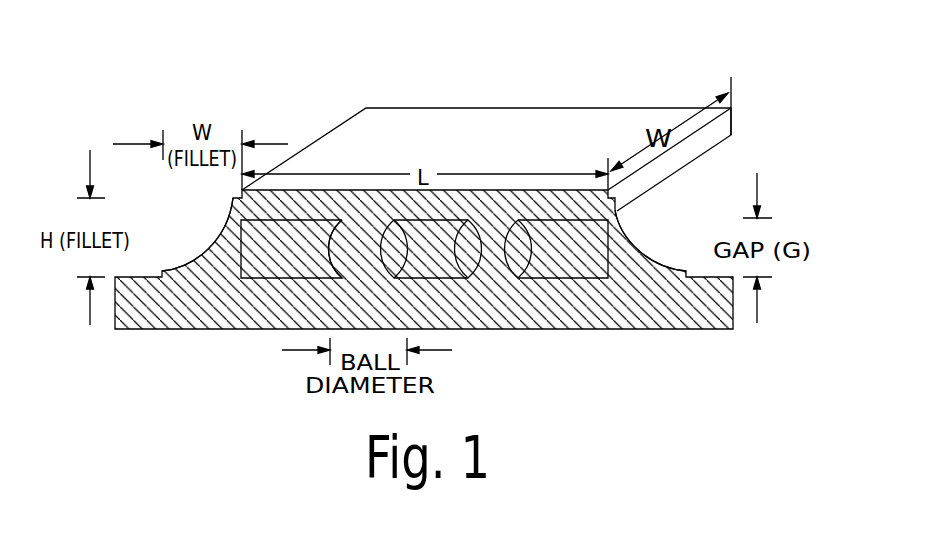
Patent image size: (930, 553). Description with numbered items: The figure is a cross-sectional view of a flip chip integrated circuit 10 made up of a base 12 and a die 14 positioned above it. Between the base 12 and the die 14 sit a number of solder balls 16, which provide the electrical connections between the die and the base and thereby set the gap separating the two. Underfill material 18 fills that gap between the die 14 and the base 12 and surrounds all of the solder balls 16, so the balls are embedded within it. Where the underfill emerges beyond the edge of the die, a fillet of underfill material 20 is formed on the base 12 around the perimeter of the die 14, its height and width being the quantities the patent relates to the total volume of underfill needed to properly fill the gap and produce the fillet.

The flip chip integrated circuit 10 is at (767, 73).
The base 12 is at (733, 329).
The die 14 is at (610, 115).
The solder balls 16 is at (372, 253).
The underfill material 18 is at (270, 265).
The fillet of underfill material 20 is at (218, 241).